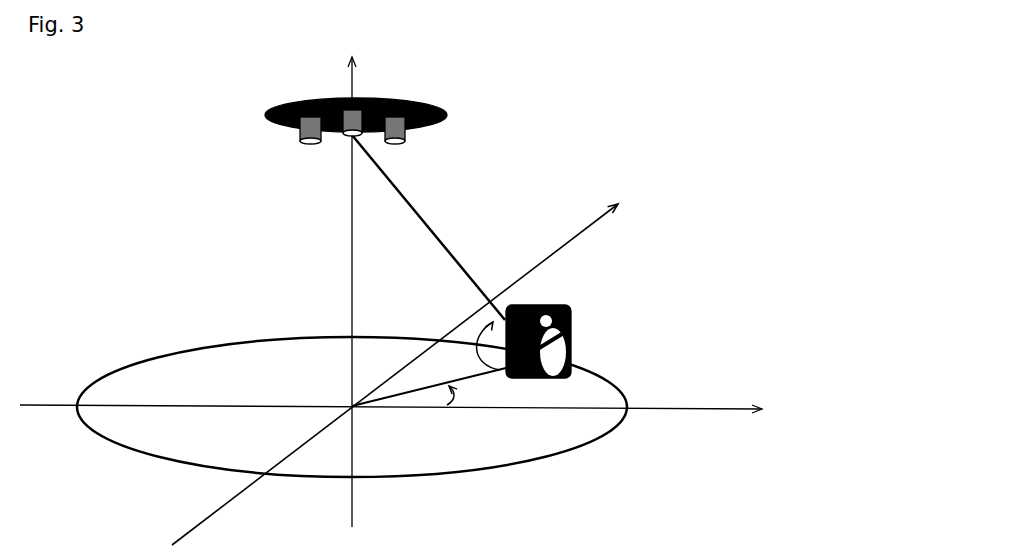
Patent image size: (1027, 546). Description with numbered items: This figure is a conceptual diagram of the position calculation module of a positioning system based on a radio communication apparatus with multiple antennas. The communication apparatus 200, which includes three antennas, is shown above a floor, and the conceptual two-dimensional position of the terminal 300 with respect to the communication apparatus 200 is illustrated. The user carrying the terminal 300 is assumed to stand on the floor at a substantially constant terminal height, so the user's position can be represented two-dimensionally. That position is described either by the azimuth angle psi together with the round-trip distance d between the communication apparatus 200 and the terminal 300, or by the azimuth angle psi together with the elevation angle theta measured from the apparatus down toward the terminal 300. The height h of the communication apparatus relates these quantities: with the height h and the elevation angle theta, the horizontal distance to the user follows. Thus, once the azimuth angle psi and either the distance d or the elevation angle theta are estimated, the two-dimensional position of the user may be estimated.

The communication apparatus 200 is at (272, 103).
The terminal 300 is at (572, 342).
The distance d is at (440, 240).
The height of a communication apparatus h is at (417, 387).
The elevation angle theta is at (467, 337).
The azimuth angle psi is at (455, 391).